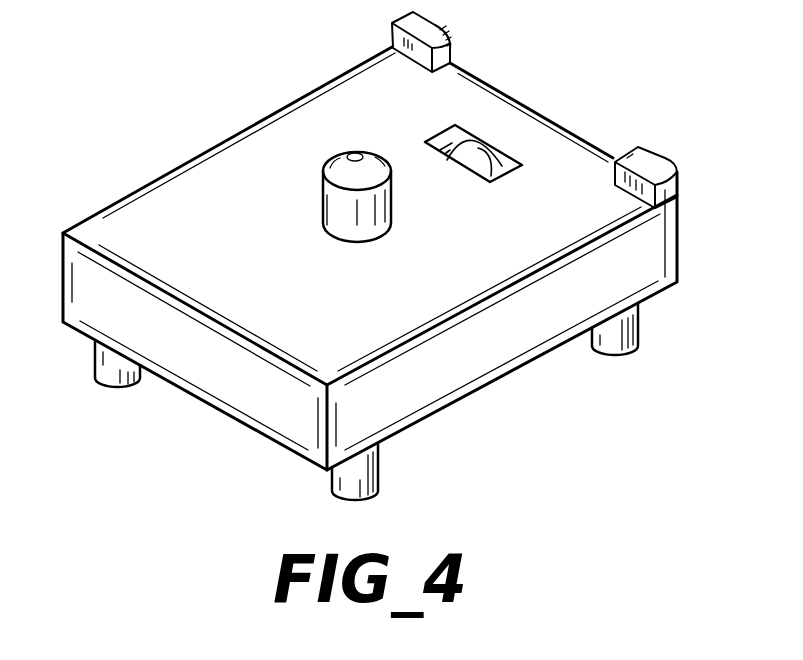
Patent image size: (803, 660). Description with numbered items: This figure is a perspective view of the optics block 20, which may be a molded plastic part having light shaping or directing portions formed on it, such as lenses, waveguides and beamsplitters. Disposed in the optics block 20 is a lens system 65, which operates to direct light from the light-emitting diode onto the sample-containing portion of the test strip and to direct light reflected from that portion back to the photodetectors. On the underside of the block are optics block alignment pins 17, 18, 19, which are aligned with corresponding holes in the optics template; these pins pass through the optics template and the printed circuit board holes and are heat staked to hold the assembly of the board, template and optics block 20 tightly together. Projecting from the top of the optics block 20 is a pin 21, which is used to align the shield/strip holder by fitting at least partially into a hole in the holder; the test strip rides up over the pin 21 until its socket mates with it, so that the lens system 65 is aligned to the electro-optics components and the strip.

The optics block alignment pin 17 is at (616, 332).
The optics block alignment pin 18 is at (118, 388).
The optics block alignment pin 19 is at (378, 467).
The optics block 20 is at (200, 156).
The pin 21 is at (323, 158).
The lens system 65 is at (493, 147).